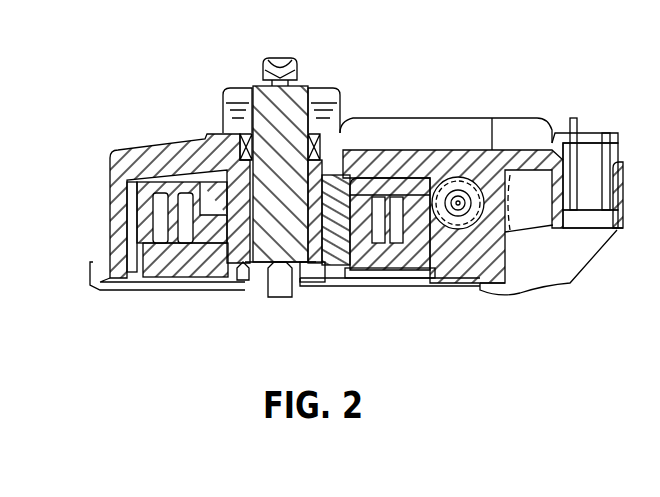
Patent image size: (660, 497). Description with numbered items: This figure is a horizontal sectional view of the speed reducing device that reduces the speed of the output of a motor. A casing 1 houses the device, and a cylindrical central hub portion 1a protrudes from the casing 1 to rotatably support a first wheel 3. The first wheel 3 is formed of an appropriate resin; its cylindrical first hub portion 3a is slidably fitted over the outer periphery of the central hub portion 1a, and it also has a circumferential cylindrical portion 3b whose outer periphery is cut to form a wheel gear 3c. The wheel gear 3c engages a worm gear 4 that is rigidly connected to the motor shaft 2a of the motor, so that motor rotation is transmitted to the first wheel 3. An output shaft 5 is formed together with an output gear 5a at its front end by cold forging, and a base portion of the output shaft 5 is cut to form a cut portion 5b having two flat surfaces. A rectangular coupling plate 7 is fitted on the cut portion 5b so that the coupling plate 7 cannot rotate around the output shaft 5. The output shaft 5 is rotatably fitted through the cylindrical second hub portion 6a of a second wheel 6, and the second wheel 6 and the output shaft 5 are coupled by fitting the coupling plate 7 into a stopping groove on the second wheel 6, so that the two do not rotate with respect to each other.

The casing 1 is at (378, 158).
The central hub portion 1a is at (337, 265).
The motor shaft 2a is at (498, 160).
The first wheel 3 is at (430, 140).
The first hub portion 3a is at (368, 268).
The circumferential cylindrical portion 3b is at (425, 275).
The wheel gear 3c is at (127, 205).
The worm gear 4 is at (483, 255).
The output shaft 5 is at (290, 102).
The output gear 5a is at (225, 112).
The cut portion 5b is at (253, 283).
The second wheel 6 is at (163, 267).
The second hub portion 6a is at (320, 272).
The coupling plate 7 is at (240, 270).